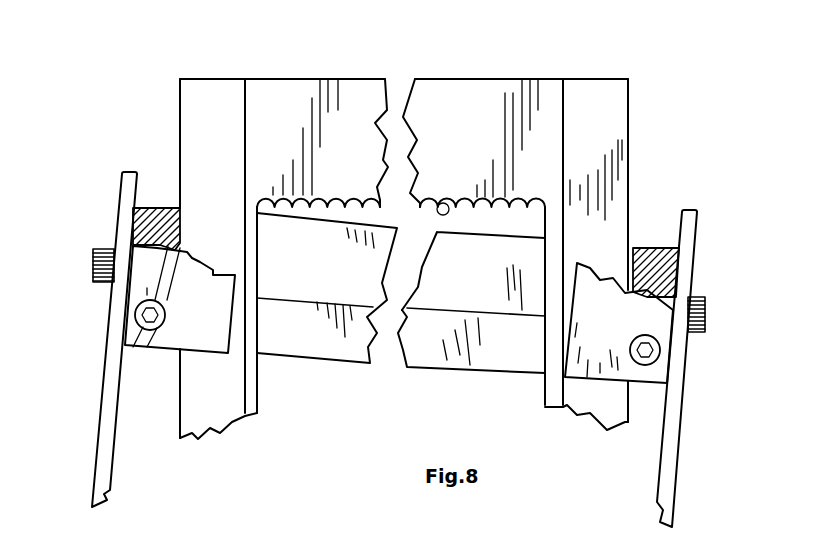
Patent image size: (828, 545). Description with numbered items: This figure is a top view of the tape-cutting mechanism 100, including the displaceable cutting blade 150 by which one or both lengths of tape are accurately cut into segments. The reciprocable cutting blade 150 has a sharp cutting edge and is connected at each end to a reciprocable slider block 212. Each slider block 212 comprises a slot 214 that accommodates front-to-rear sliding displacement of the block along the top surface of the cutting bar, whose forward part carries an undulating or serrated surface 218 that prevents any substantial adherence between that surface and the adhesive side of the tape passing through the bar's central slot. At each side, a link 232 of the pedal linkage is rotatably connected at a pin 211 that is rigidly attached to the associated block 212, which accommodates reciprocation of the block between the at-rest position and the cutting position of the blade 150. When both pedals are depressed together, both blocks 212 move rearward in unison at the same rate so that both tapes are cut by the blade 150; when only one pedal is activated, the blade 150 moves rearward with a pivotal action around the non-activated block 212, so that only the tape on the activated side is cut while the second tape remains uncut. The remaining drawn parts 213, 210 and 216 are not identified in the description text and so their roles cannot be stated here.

The tape-cutting mechanism 100 is at (203, 64).
The vertical post 213 is at (225, 113).
The slot 214 is at (363, 98).
The serrated surface 218 is at (443, 203).
The lower rail 210 is at (289, 301).
The cutting blade 150 is at (473, 274).
The lower cross member 216 is at (470, 373).
The slider block 212 is at (218, 325).
The pin 211 is at (95, 268).
The link 232 is at (110, 438).